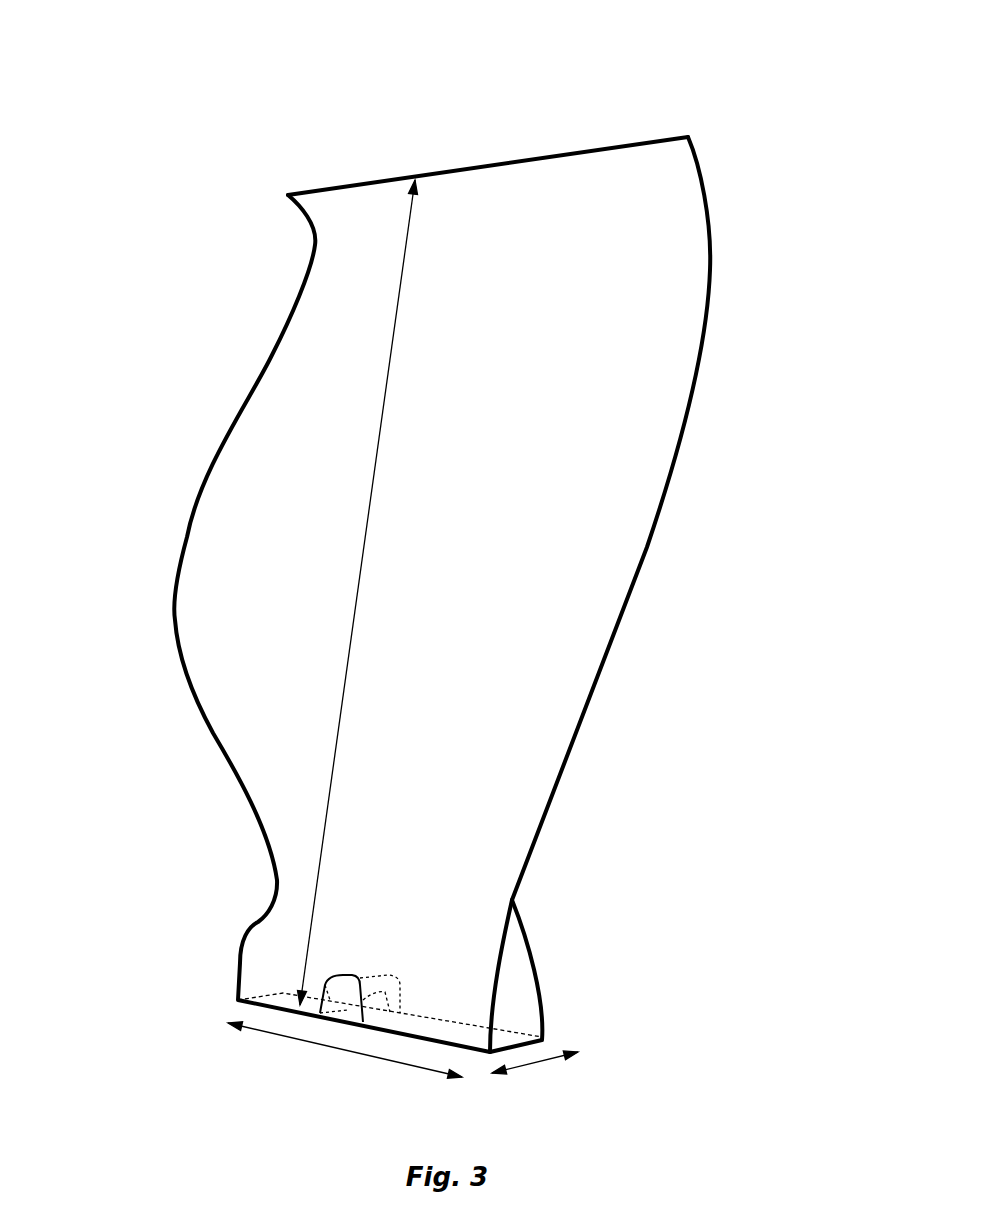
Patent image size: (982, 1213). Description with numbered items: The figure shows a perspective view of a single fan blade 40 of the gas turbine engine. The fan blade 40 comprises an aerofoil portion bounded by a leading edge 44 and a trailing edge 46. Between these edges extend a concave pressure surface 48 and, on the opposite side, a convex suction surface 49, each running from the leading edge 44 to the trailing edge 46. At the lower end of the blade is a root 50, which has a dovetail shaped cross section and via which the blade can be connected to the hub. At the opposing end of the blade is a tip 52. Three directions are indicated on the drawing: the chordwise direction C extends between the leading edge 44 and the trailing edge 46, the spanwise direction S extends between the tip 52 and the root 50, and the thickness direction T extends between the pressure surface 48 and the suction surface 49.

The fan blade 40 is at (727, 142).
The leading edge 44 is at (272, 355).
The trailing edge 46 is at (647, 547).
The concave pressure surface 48 is at (252, 563).
The convex suction surface 49 is at (558, 822).
The root 50 is at (545, 1002).
The tip 52 is at (523, 167).